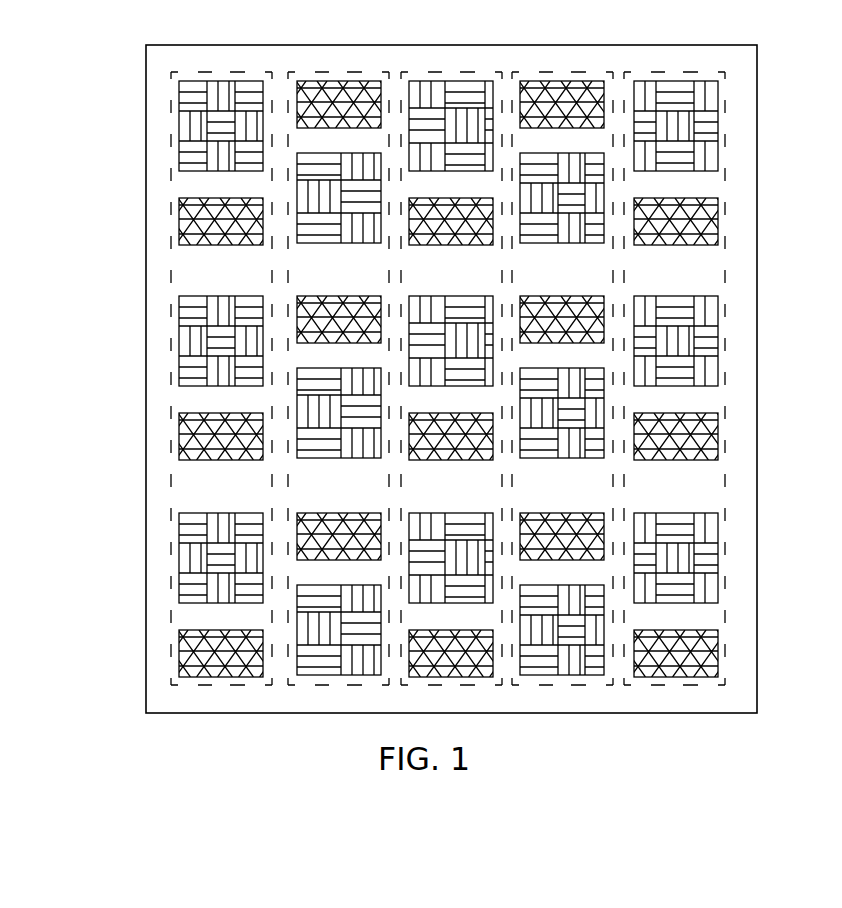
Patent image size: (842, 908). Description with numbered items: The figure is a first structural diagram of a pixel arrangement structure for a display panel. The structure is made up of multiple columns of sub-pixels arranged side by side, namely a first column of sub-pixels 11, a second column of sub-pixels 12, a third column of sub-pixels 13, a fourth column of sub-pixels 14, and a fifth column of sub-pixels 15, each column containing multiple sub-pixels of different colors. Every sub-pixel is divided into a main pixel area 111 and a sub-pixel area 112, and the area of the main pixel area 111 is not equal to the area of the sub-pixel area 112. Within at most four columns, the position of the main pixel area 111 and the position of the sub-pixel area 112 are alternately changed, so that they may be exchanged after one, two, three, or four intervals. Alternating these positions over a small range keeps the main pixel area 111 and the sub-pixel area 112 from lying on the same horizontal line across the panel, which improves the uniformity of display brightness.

The first column of sub-pixels 11 is at (178, 342).
The second column of sub-pixels 12 is at (292, 72).
The third column of sub-pixels 13 is at (406, 72).
The fourth column of sub-pixels 14 is at (517, 72).
The fifth column of sub-pixels 15 is at (628, 72).
The main pixel area 111 is at (200, 113).
The sub-pixel area 112 is at (200, 206).